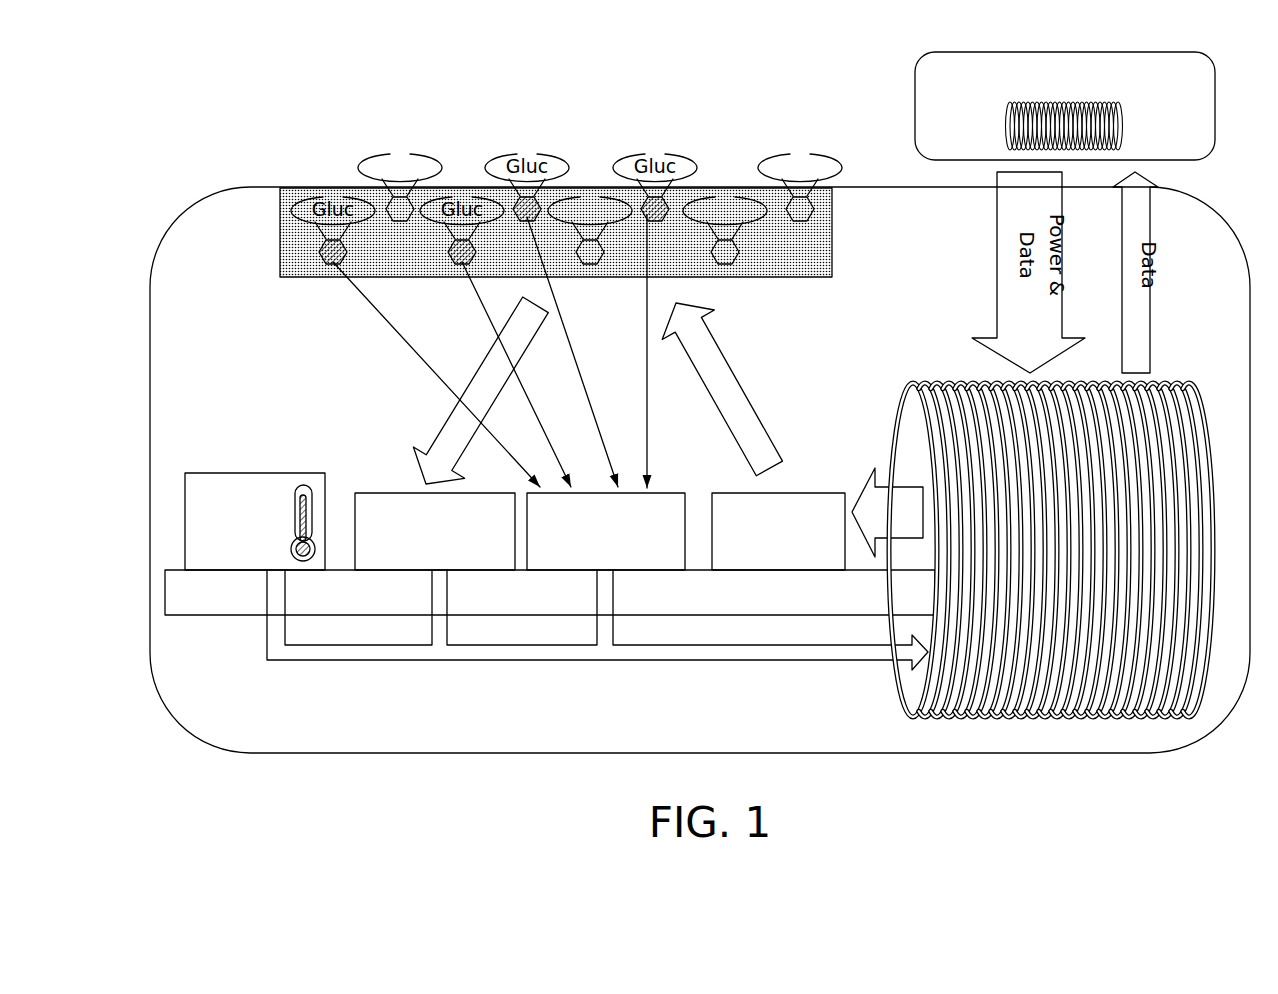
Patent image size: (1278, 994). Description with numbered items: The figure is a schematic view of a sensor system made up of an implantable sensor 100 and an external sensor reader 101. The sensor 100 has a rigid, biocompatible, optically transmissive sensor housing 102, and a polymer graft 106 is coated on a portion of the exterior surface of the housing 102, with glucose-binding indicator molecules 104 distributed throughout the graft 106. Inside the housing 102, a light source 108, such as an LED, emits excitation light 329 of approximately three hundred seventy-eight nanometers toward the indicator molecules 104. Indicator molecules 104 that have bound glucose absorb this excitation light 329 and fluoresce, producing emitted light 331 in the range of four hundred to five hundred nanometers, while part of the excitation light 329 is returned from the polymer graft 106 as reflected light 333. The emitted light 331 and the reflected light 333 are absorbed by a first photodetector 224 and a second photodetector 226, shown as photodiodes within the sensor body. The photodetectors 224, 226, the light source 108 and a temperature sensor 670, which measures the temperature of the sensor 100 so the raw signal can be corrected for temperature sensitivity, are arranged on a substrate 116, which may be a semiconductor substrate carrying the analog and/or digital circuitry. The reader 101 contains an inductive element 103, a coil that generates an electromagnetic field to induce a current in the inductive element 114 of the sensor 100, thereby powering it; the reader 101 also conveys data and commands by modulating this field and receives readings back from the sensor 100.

The sensor 100 is at (691, 462).
The sensor reader 101 is at (1042, 106).
The sensor housing 102 is at (283, 753).
The inductive element 103 is at (1141, 104).
The indicator molecules 104 is at (569, 115).
The polymer graft 106 is at (280, 252).
The light source 108 is at (817, 493).
The inductive element 114 is at (1055, 717).
The substrate 116 is at (243, 615).
The first photodetector 224 is at (663, 493).
The second photodetector 226 is at (385, 493).
The excitation light 329 is at (757, 407).
The emitted light 331 is at (428, 362).
The reflected light 333 is at (447, 412).
The temperature sensor 670 is at (245, 473).